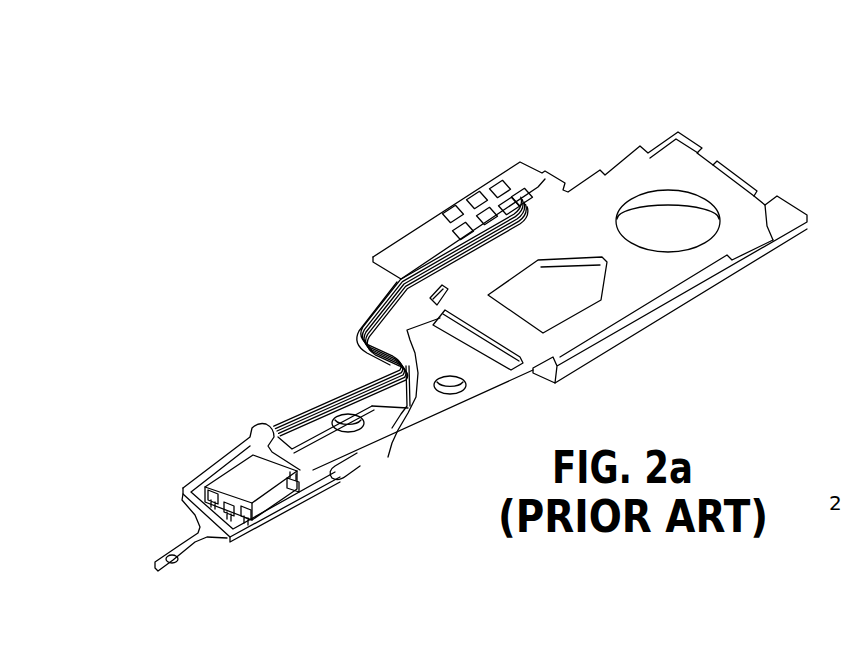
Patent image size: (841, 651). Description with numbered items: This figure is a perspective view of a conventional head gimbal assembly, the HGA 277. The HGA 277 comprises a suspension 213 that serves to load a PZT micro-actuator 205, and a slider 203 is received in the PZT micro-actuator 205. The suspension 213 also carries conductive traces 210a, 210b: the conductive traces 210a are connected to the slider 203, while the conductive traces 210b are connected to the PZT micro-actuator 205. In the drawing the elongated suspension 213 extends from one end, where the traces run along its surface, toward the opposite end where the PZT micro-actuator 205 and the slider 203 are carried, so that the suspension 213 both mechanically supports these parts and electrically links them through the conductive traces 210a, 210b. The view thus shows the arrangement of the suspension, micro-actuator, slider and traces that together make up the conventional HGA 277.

The HGA 277 is at (252, 210).
The suspension 213 is at (637, 274).
The conductive traces 210a is at (341, 382).
The conductive traces 210b is at (322, 412).
The slider 203 is at (237, 482).
The PZT micro-actuator 205 is at (255, 467).